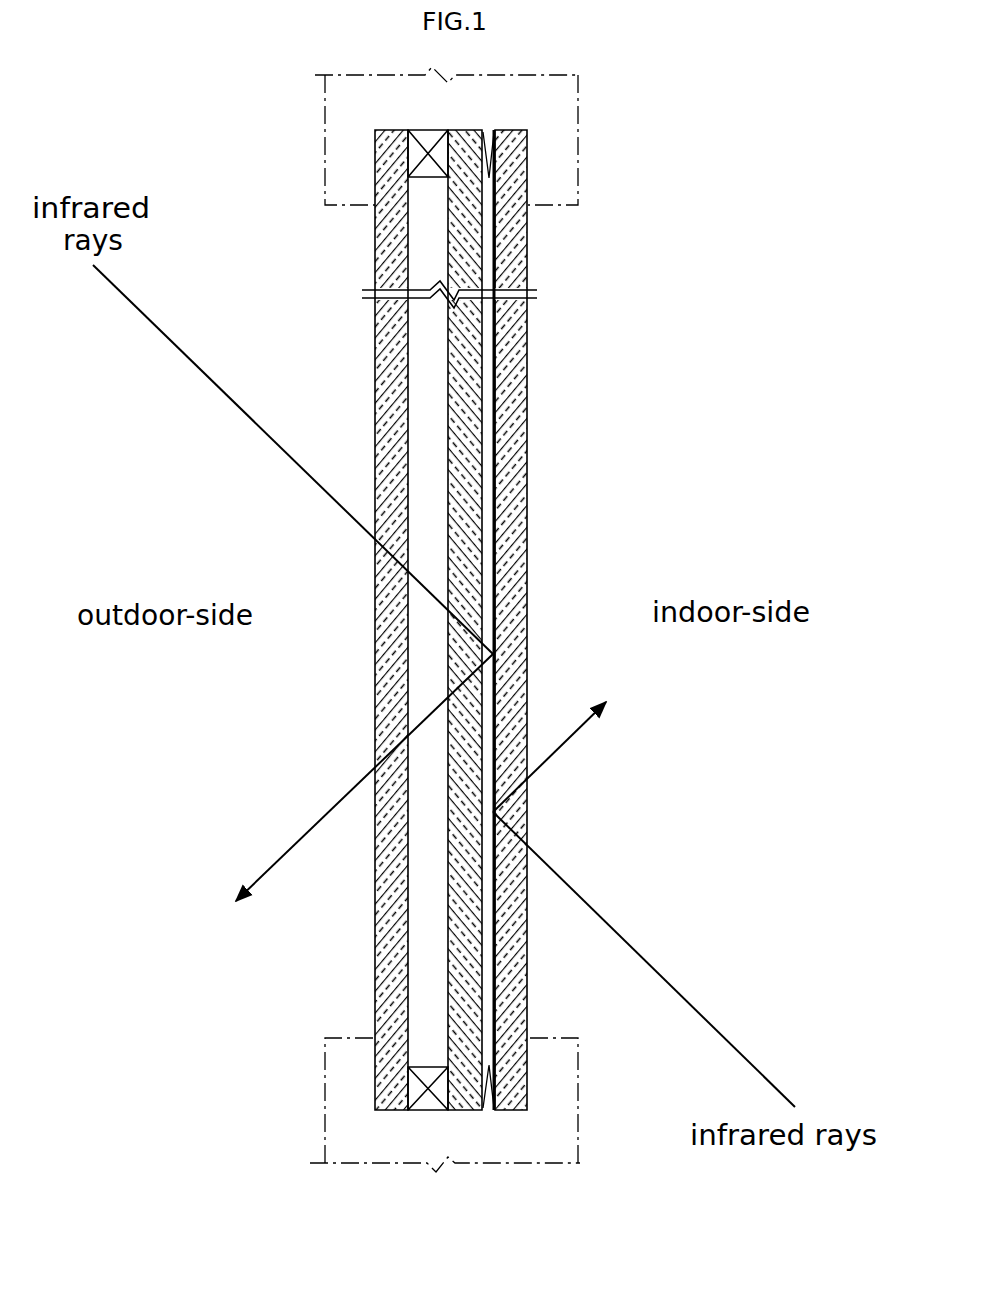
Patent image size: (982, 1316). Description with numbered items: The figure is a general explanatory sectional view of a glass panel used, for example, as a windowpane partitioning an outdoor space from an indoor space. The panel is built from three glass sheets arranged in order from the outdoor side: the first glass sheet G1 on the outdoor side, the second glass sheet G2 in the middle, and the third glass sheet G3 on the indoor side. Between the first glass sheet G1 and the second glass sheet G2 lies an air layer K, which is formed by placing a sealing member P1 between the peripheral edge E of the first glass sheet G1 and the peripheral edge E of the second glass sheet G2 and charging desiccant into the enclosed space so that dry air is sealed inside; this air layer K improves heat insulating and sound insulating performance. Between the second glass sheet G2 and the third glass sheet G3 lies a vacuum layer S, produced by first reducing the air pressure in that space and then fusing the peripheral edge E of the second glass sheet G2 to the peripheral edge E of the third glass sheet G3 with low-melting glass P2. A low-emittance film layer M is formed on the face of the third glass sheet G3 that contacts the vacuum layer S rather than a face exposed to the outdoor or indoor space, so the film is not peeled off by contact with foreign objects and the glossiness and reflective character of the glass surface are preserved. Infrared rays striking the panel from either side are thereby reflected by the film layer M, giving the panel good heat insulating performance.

The first glass sheet G1 is at (375, 245).
The second glass sheet G2 is at (448, 333).
The third glass sheet G3 is at (530, 243).
The air layer K is at (428, 420).
The vacuum layer S is at (488, 376).
The low-emittance film layer M is at (495, 492).
The sealing member P1 is at (428, 130).
The low-melting glass P2 is at (486, 172).
The peripheral edge E is at (444, 160).